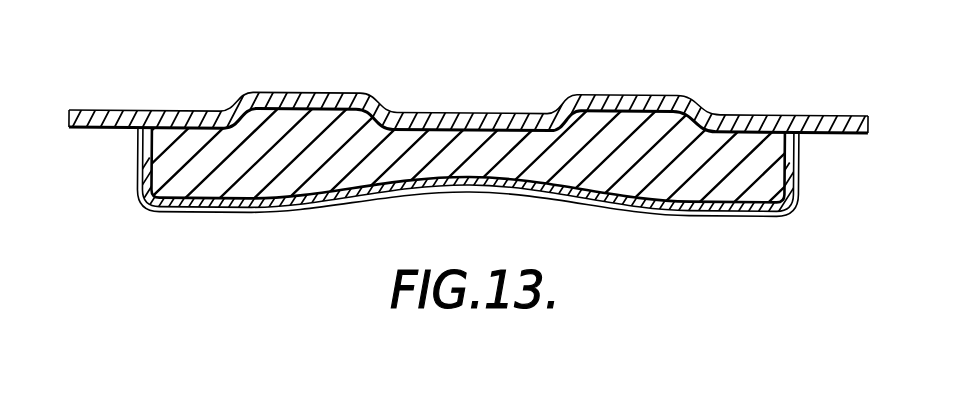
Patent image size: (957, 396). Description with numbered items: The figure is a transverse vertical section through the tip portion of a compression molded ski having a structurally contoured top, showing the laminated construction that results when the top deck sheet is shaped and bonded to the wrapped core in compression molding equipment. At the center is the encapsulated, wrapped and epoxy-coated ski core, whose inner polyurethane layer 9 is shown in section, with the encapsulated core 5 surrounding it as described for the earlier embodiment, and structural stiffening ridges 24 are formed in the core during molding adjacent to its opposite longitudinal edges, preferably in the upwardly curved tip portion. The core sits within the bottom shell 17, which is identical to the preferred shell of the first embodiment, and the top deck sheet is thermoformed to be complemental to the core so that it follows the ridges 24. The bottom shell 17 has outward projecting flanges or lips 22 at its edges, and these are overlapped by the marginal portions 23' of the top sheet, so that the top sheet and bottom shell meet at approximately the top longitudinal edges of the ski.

The flanges or lips 22 is at (100, 130).
The marginal portions 23' is at (467, 94).
The structural stiffening ridges 24 is at (315, 98).
The inner liner layer 5 is at (477, 184).
The bottom shell 17 is at (713, 211).
The inner polyurethane layer 9 is at (223, 188).